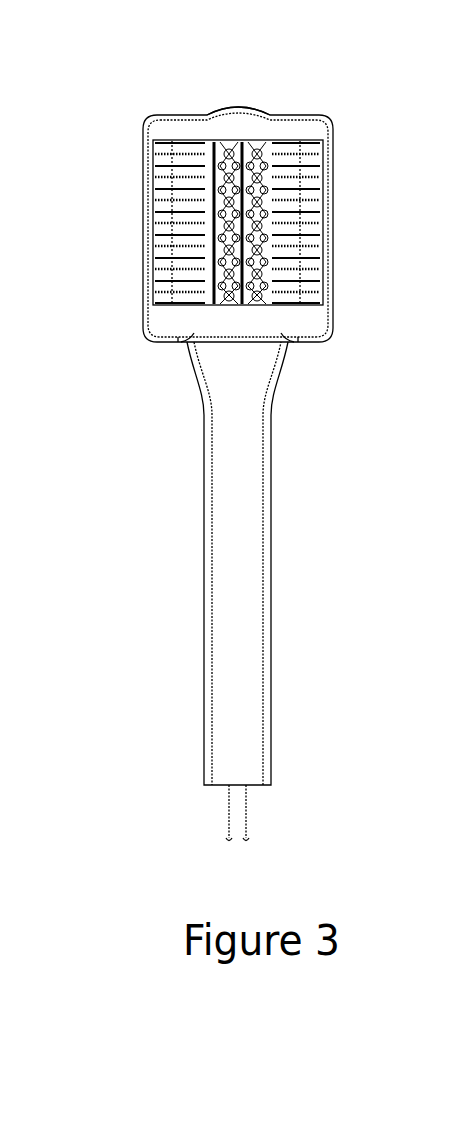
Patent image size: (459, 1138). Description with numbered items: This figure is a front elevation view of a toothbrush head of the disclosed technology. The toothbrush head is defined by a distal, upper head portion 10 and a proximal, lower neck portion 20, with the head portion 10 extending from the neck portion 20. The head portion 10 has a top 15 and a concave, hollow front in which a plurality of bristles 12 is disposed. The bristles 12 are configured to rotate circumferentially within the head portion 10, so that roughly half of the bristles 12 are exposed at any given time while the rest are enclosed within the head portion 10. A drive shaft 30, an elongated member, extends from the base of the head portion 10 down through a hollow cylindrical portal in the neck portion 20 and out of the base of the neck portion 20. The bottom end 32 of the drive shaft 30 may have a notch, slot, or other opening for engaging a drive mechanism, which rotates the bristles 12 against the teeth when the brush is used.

The head portion 10 is at (335, 111).
The bristles 12 is at (222, 270).
The top 15 is at (218, 108).
The neck portion 20 is at (288, 422).
The drive shaft 30 is at (227, 813).
The bottom end 32 is at (238, 832).